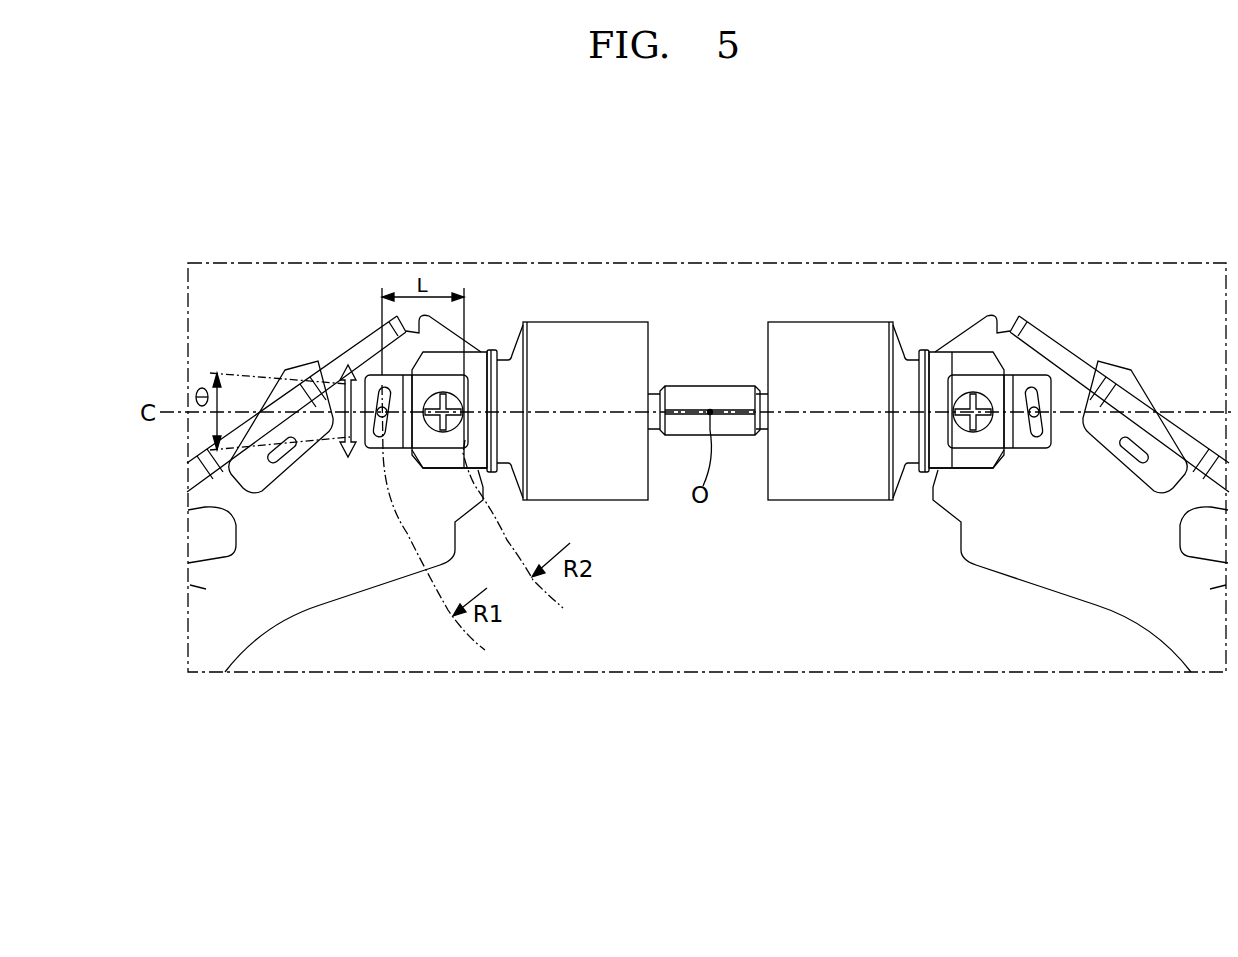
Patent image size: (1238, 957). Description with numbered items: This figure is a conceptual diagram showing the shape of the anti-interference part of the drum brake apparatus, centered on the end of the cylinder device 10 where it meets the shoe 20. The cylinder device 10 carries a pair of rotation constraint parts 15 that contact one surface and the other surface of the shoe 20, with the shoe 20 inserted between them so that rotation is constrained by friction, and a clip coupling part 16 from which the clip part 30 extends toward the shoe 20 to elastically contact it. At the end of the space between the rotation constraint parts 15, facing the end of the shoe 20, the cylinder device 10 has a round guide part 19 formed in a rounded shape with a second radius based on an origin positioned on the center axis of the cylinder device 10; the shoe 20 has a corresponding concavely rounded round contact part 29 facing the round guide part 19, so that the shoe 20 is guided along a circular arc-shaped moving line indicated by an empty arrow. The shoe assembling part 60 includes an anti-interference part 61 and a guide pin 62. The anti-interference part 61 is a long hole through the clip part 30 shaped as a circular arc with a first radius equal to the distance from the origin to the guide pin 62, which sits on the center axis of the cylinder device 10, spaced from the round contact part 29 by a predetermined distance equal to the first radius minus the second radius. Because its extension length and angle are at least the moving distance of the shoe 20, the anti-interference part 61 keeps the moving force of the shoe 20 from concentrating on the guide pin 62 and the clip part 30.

The cylinder device 10 is at (583, 312).
The rotation constraint part 15 is at (442, 460).
The clip coupling part 16 is at (448, 352).
The round guide part 19 is at (693, 337).
The round contact part 29 is at (500, 350).
The shoe 20 is at (205, 589).
The clip part 30 is at (422, 383).
The shoe assembling part 60 is at (701, 589).
The anti-interference part 61 is at (414, 448).
The guide pin 62 is at (364, 448).